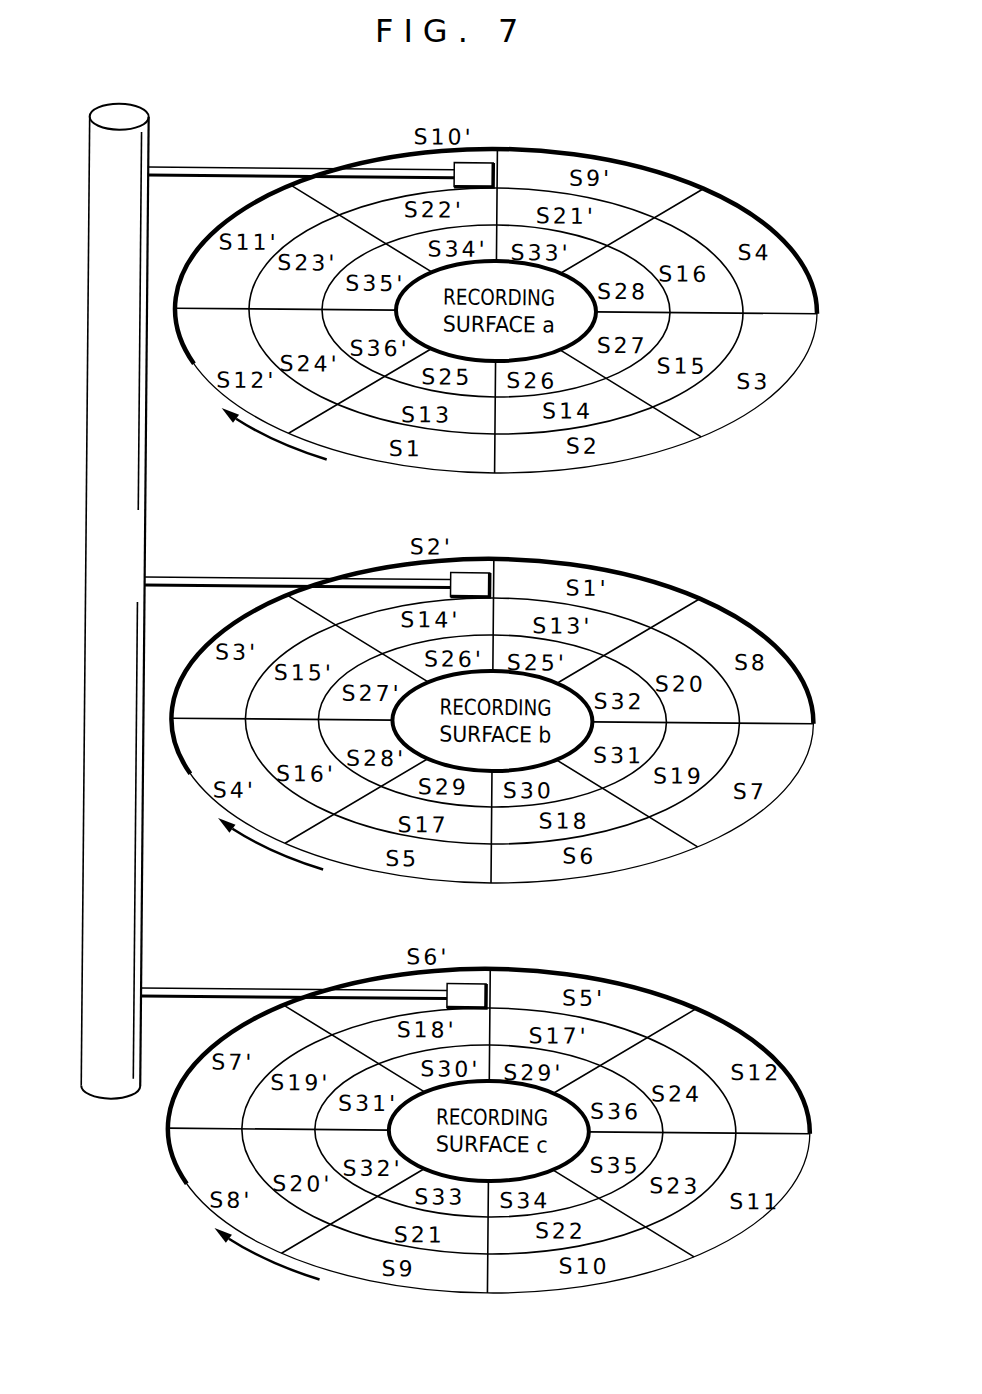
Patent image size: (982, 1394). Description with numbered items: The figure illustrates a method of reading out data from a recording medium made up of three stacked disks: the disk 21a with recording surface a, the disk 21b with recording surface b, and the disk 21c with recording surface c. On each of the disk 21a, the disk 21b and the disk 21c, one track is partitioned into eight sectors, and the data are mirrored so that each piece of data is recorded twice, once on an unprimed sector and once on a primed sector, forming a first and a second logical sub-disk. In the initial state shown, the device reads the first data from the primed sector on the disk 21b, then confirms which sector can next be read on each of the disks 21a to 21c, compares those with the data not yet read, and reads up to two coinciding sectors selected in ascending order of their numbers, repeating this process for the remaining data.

The disk 21a is at (364, 163).
The disk 21b is at (362, 573).
The disk 21c is at (364, 986).